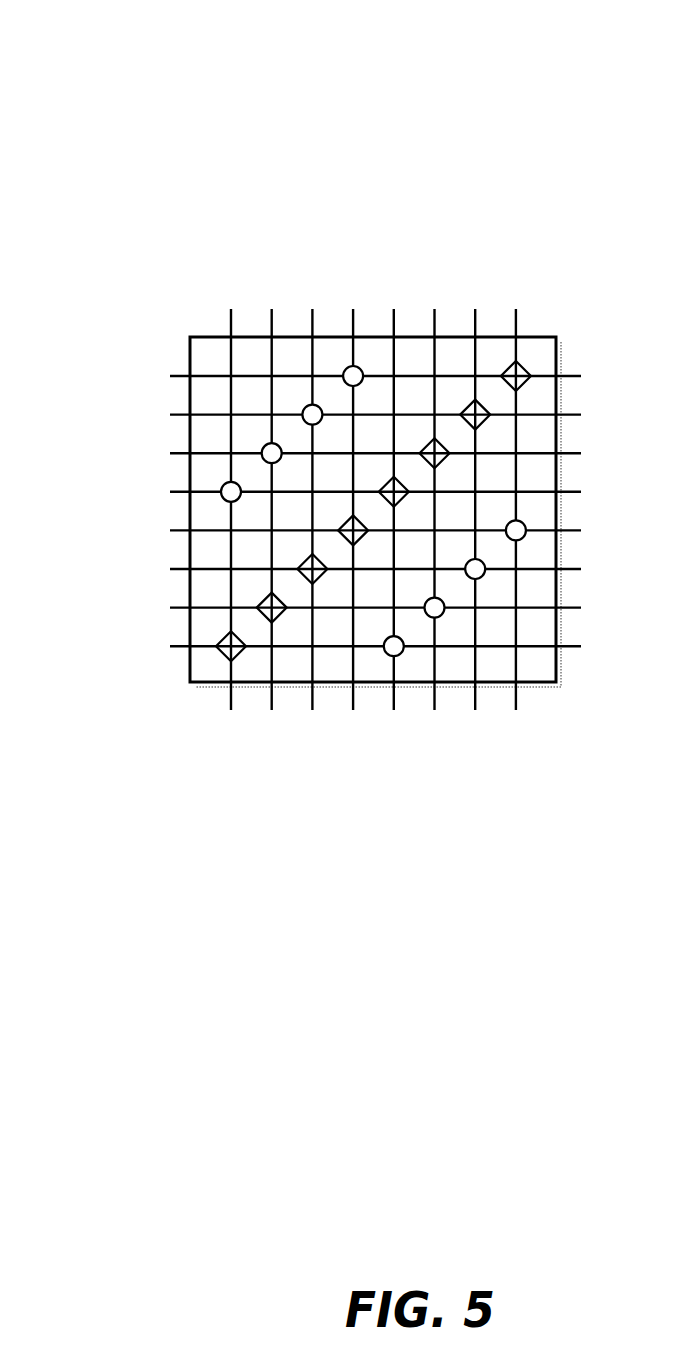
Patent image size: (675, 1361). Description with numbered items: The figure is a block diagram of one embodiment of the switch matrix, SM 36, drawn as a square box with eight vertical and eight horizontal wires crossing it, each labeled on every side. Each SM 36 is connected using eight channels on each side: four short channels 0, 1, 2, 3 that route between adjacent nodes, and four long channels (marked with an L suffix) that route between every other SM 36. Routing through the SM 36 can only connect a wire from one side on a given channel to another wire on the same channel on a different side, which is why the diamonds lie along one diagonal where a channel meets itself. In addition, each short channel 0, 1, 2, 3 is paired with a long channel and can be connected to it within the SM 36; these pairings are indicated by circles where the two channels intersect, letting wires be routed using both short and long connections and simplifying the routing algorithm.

The switch matrix 36 is at (99, 143).
The short channel 0 is at (378, 513).
The short channel 1 is at (378, 513).
The short channel 2 is at (378, 513).
The short channel 3 is at (378, 513).